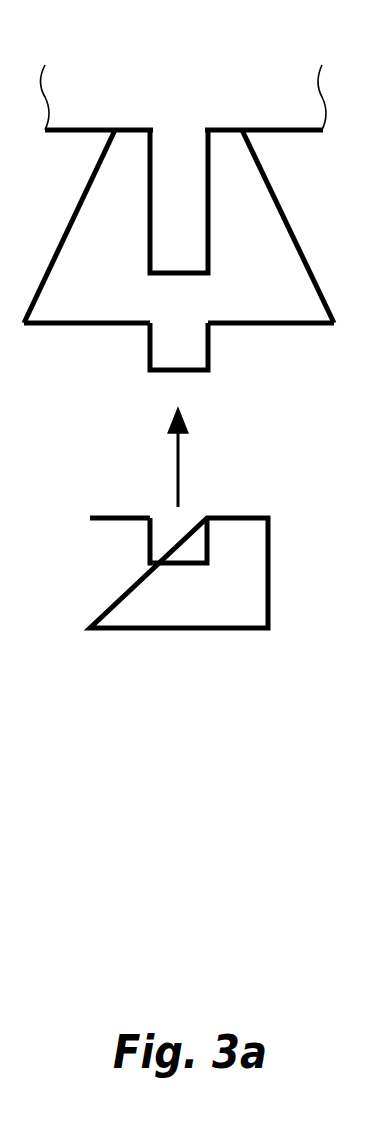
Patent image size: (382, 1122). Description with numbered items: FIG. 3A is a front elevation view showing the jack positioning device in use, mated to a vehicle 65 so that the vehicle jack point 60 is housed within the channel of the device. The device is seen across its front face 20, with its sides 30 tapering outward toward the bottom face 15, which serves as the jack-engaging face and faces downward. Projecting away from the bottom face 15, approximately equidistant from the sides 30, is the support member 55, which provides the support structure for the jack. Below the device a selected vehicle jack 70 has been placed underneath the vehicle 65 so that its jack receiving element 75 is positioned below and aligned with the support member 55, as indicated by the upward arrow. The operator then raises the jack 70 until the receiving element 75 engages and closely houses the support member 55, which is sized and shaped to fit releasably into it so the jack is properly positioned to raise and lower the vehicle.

The bottom face 15 is at (113, 327).
The front face 20 is at (274, 300).
The sides 30 is at (287, 217).
The support member 55 is at (183, 372).
The vehicle jack point 60 is at (192, 196).
The vehicle 65 is at (128, 95).
The vehicle jack 70 is at (194, 608).
The jack receiving element 75 is at (188, 553).